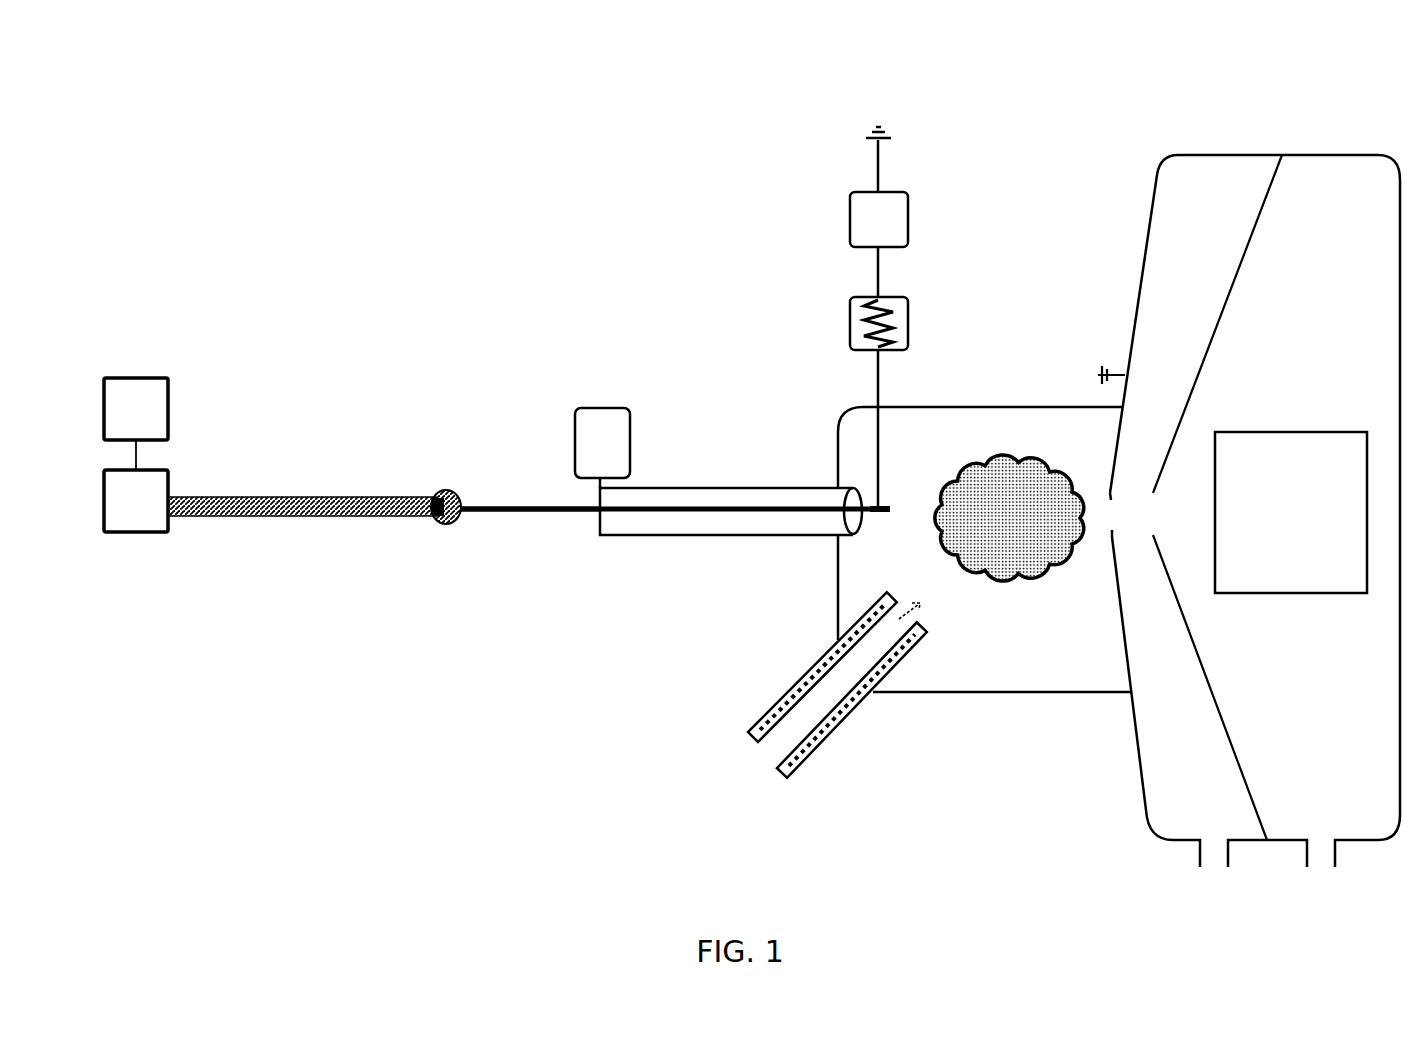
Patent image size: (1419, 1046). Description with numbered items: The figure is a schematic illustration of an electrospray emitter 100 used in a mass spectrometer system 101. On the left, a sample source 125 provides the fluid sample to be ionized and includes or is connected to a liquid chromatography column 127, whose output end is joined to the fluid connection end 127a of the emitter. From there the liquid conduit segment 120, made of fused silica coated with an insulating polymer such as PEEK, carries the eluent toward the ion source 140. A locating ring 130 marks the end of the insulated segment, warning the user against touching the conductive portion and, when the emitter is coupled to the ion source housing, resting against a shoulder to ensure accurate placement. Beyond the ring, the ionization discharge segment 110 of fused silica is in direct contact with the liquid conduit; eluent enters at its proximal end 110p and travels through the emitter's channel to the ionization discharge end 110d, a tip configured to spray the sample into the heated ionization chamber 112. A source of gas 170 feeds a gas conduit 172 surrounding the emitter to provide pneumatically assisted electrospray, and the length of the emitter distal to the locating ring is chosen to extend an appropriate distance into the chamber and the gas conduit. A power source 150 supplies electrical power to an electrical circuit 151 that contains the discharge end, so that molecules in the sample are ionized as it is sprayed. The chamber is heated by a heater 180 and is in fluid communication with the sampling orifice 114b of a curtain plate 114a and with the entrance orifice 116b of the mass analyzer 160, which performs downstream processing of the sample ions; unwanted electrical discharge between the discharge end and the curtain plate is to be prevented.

The mass spectrometer system 101 is at (223, 112).
The electrospray emitter 100 is at (427, 460).
The sample source 125 is at (136, 409).
The liquid chromatography column 127 is at (136, 486).
The fluid connection end 127a is at (176, 526).
The liquid conduit segment 120 is at (250, 523).
The locating ring 130 is at (456, 542).
The ionization discharge segment 110 is at (795, 495).
The proximal end 110p is at (521, 525).
The ionization discharge end 110d is at (900, 502).
The ion source 140 is at (724, 464).
The source of gas 170 is at (602, 448).
The gas conduit 172 is at (709, 550).
The power source 150 is at (879, 318).
The electrical circuit 151 is at (846, 305).
The heated ionization chamber 112 is at (1119, 511).
The curtain plate 114a is at (1138, 262).
The sampling orifice 114b is at (1111, 521).
The entrance orifice 116b is at (1215, 497).
The mass analyzer 160 is at (1291, 512).
The heater 180 is at (836, 735).